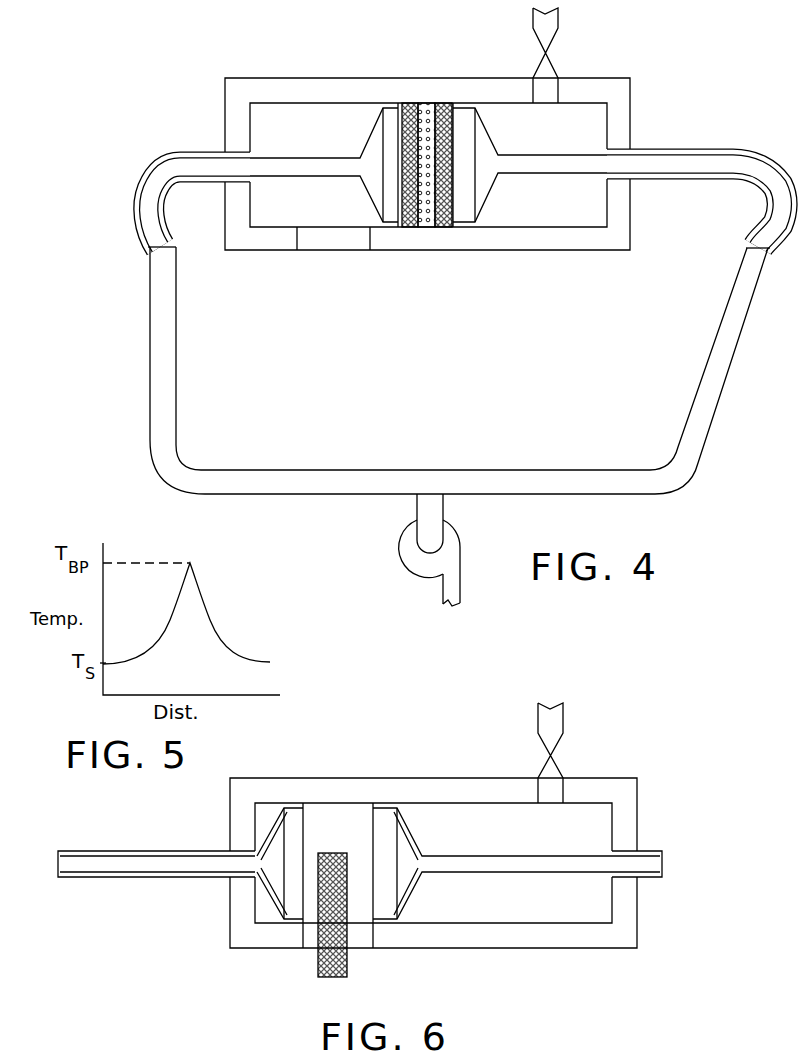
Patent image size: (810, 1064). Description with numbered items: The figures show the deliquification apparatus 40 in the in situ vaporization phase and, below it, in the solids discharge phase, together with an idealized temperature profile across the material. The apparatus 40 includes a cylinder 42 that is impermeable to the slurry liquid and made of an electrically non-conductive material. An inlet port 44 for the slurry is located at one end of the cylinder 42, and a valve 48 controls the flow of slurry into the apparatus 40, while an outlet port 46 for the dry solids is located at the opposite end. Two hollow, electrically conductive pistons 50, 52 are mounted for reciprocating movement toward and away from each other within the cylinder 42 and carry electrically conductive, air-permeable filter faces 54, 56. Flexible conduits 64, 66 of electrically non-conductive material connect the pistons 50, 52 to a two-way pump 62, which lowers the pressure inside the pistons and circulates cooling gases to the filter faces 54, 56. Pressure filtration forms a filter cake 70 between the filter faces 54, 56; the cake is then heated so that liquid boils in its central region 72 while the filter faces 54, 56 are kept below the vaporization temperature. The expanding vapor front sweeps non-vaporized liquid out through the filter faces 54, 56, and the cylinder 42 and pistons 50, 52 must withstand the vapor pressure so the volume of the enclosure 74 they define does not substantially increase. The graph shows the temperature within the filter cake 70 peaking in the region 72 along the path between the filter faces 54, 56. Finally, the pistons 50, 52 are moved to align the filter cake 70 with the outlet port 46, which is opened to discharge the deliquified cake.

In FIG. 4, the deliquification apparatus 40 is at (439, 307).
In FIG. 6, the deliquification apparatus 40 is at (368, 850).
In FIG. 4, the cylinder 42 is at (255, 78).
In FIG. 6, the cylinder 42 is at (428, 780).
In FIG. 4, the inlet port 44 is at (540, 88).
In FIG. 6, the inlet port 44 is at (540, 788).
In FIG. 4, the outlet port 46 is at (342, 238).
In FIG. 6, the outlet port 46 is at (357, 940).
In FIG. 4, the valve 48 is at (558, 33).
In FIG. 6, the valve 48 is at (563, 740).
In FIG. 4, the piston 50 is at (365, 197).
In FIG. 6, the piston 50 is at (268, 908).
In FIG. 4, the piston 52 is at (490, 123).
In FIG. 6, the piston 52 is at (418, 890).
In FIG. 4, the filter face 54 is at (397, 147).
In FIG. 6, the filter face 54 is at (305, 810).
In FIG. 4, the filter face 56 is at (456, 182).
In FIG. 6, the filter face 56 is at (377, 838).
In FIG. 4, the two-way pump 62 is at (460, 536).
In FIG. 4, the flexible conduit 64 is at (157, 162).
In FIG. 6, the flexible conduit 64 is at (122, 878).
In FIG. 4, the flexible conduit 66 is at (750, 156).
In FIG. 6, the flexible conduit 66 is at (640, 850).
In FIG. 4, the filter cake 70 is at (408, 103).
In FIG. 6, the filter cake 70 is at (318, 968).
In FIG. 4, the central region 72 is at (427, 220).
In FIG. 4, the enclosure 74 is at (396, 235).